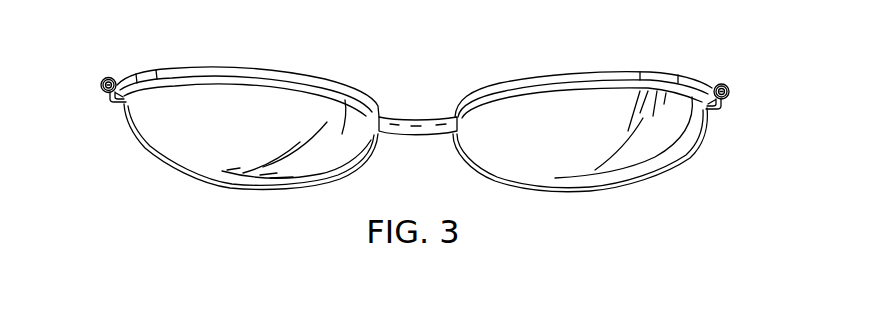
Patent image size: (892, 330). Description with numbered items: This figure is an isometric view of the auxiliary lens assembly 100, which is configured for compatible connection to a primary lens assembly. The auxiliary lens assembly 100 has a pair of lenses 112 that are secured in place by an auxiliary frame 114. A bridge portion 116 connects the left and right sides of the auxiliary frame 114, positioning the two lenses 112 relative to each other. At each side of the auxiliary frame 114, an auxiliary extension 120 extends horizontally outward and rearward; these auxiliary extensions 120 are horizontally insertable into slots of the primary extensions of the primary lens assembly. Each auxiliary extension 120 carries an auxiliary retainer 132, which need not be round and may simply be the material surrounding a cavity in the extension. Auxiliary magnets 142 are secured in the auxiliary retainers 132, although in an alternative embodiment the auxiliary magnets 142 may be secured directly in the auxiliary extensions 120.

The auxiliary lens assembly 100 is at (413, 136).
The lenses 112 is at (206, 142).
The auxiliary frame 114 is at (242, 68).
The bridge portion 116 is at (413, 117).
The auxiliary extension 120 is at (110, 102).
The auxiliary retainer 132 is at (111, 77).
The auxiliary magnets 142 is at (101, 79).